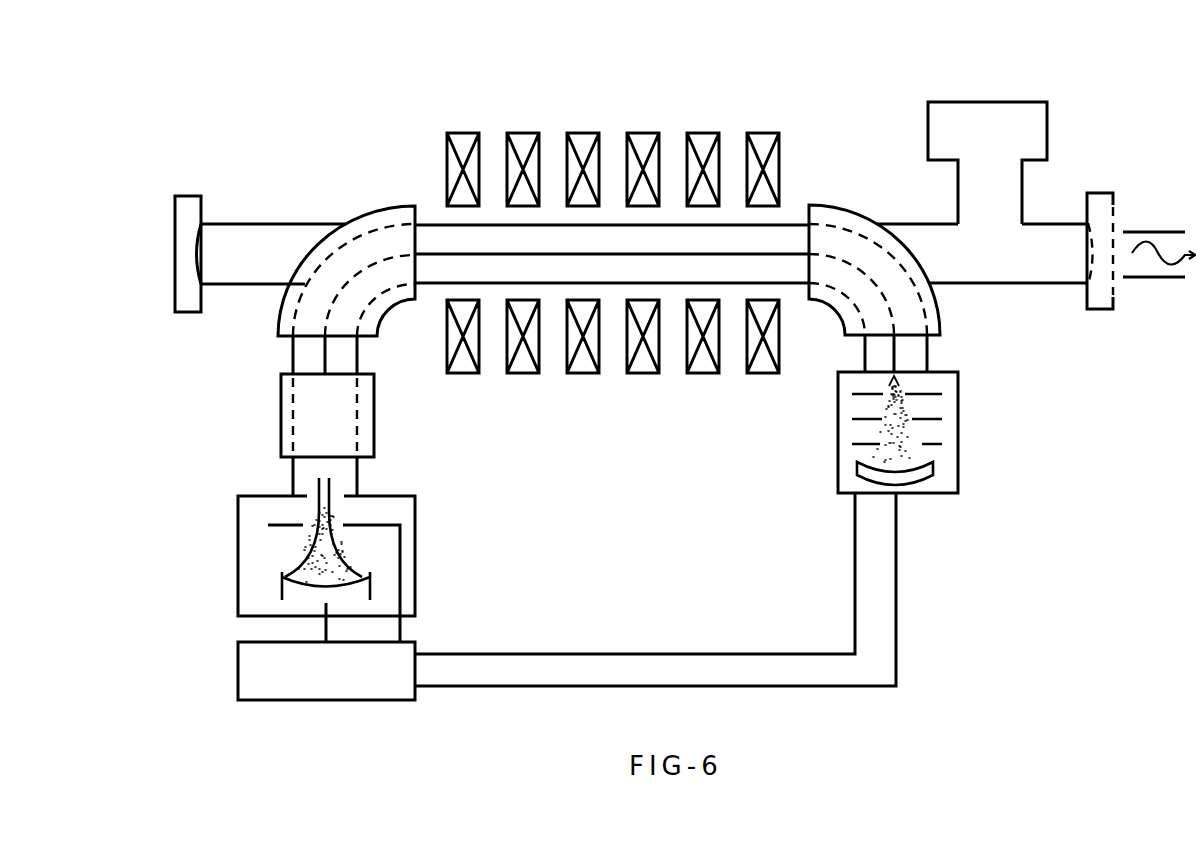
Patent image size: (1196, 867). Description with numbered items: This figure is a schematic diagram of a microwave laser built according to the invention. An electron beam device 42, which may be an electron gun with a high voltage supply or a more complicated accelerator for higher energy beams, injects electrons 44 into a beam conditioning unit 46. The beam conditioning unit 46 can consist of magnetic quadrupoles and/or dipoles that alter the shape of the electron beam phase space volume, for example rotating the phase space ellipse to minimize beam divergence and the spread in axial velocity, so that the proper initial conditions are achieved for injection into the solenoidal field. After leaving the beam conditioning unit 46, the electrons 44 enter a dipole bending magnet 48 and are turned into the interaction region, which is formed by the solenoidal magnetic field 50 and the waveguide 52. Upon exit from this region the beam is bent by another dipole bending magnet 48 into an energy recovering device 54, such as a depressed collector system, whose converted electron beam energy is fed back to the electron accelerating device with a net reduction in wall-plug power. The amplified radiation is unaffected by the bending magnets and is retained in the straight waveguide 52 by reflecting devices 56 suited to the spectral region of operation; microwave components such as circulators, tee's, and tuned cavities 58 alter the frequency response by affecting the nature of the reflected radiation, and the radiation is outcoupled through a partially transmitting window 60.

The electron beam device 42 is at (420, 557).
The electrons 44 is at (302, 553).
The beam conditioning unit 46 is at (278, 416).
The dipole bending magnet 48 is at (384, 203).
The solenoidal magnetic field 50 is at (640, 377).
The waveguide 52 is at (604, 220).
The energy recovering device 54 is at (960, 422).
The reflecting devices 56 is at (191, 188).
The circulators, tee's, tuned cavities 58 is at (1023, 98).
The partially transmitting window 60 is at (1105, 190).